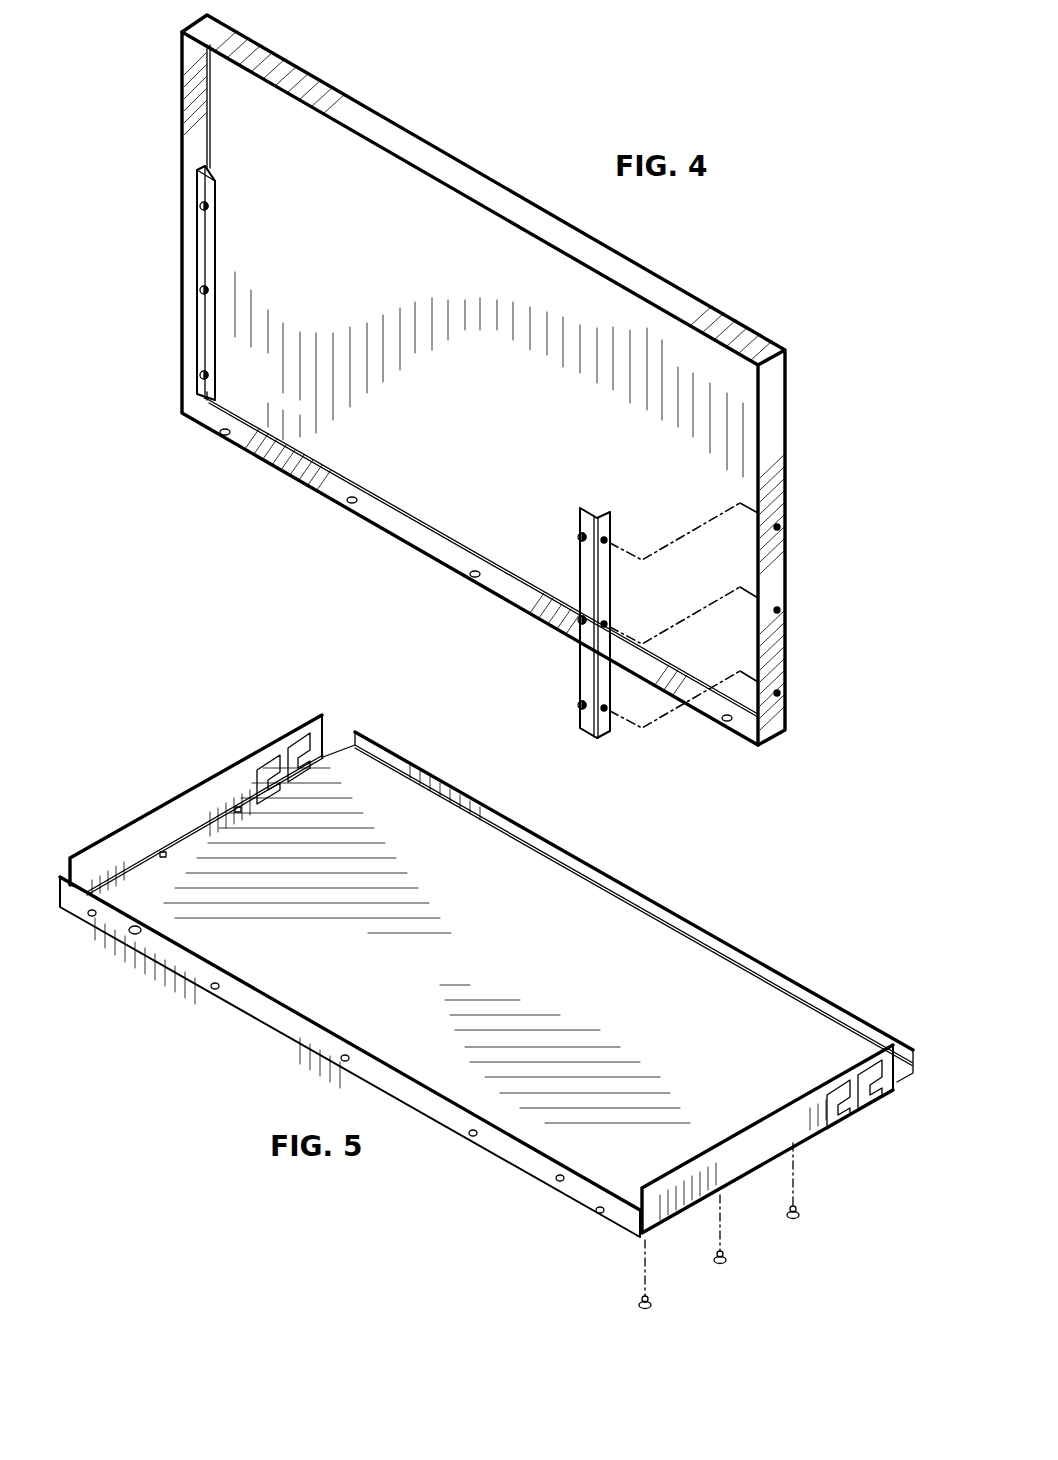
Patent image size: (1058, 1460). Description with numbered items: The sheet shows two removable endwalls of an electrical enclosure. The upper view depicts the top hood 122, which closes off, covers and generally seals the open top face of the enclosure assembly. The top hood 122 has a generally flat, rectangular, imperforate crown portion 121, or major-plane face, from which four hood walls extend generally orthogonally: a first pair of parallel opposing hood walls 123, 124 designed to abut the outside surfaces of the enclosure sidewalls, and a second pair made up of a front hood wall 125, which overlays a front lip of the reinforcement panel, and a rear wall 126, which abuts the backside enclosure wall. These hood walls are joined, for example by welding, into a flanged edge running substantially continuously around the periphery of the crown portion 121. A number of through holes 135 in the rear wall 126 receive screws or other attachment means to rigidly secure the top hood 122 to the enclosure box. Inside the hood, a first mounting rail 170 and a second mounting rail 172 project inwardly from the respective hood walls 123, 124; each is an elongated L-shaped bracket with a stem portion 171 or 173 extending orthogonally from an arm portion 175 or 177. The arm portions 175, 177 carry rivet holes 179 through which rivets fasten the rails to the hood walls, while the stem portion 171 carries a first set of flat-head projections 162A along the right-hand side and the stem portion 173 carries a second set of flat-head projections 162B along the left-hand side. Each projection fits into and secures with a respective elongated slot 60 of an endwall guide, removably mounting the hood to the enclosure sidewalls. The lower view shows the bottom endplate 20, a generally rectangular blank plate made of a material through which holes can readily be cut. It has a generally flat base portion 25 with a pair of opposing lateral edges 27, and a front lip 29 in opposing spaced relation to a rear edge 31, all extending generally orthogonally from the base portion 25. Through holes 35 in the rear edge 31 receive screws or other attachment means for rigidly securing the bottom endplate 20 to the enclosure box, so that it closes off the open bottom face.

In FIG. 4, the top hood 122 is at (147, 190).
In FIG. 4, the crown portion 121 is at (392, 183).
In FIG. 4, the hood wall 123 is at (772, 430).
In FIG. 4, the hood wall 124 is at (193, 120).
In FIG. 4, the front hood wall 125 is at (455, 178).
In FIG. 4, the rear wall 126 is at (398, 530).
In FIG. 4, the through holes 135 is at (230, 428).
In FIG. 4, the first mounting rail 170 is at (610, 612).
In FIG. 4, the stem portion 171 is at (580, 508).
In FIG. 4, the second mounting rail 172 is at (193, 278).
In FIG. 4, the stem portion 173 is at (217, 226).
In FIG. 4, the arm portion 175 is at (613, 517).
In FIG. 4, the arm portion 177 is at (205, 172).
In FIG. 4, the rivet holes 179 is at (608, 714).
In FIG. 4, the first set of flat-head projections 162A is at (578, 536).
In FIG. 4, the second set of flat-head projections 162B is at (200, 206).
In FIG. 5, the bottom endplate 20 is at (210, 722).
In FIG. 5, the base portion 25 is at (547, 895).
In FIG. 5, the lateral edges 27 is at (172, 798).
In FIG. 5, the front lip 29 is at (742, 950).
In FIG. 5, the rear edge 31 is at (306, 1028).
In FIG. 5, the through holes 35 is at (92, 917).
In FIG. 5, the elongated slots 60 is at (800, 1220).